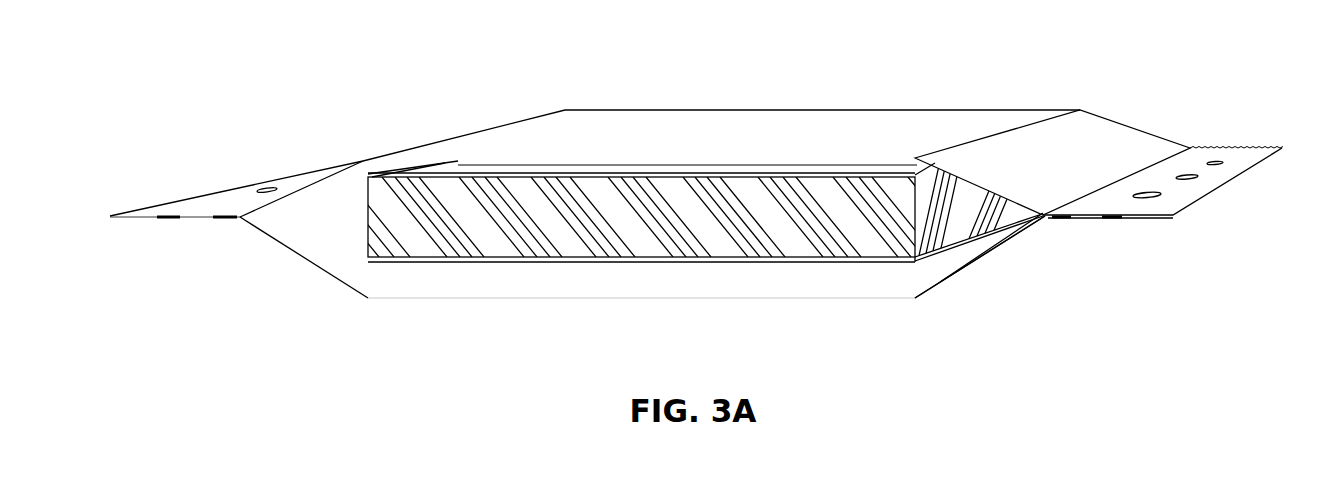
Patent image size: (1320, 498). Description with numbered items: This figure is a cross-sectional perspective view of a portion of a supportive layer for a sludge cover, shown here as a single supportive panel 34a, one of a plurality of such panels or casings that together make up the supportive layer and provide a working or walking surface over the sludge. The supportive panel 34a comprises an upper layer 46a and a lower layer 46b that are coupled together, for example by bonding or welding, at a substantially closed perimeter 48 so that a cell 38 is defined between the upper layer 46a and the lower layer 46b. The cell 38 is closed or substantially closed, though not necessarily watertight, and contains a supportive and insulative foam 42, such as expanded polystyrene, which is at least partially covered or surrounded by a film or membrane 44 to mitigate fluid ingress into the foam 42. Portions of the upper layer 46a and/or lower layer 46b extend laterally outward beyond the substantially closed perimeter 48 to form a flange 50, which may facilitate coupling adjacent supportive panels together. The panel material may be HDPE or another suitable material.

The supportive panel 34a is at (1076, 70).
The cell 38 is at (890, 285).
The foam 42 is at (605, 198).
The film or membrane 44 is at (660, 168).
The upper layer 46a is at (498, 137).
The lower layer 46b is at (423, 298).
The substantially closed perimeter 48 is at (1085, 198).
The flange 50 is at (1153, 180).